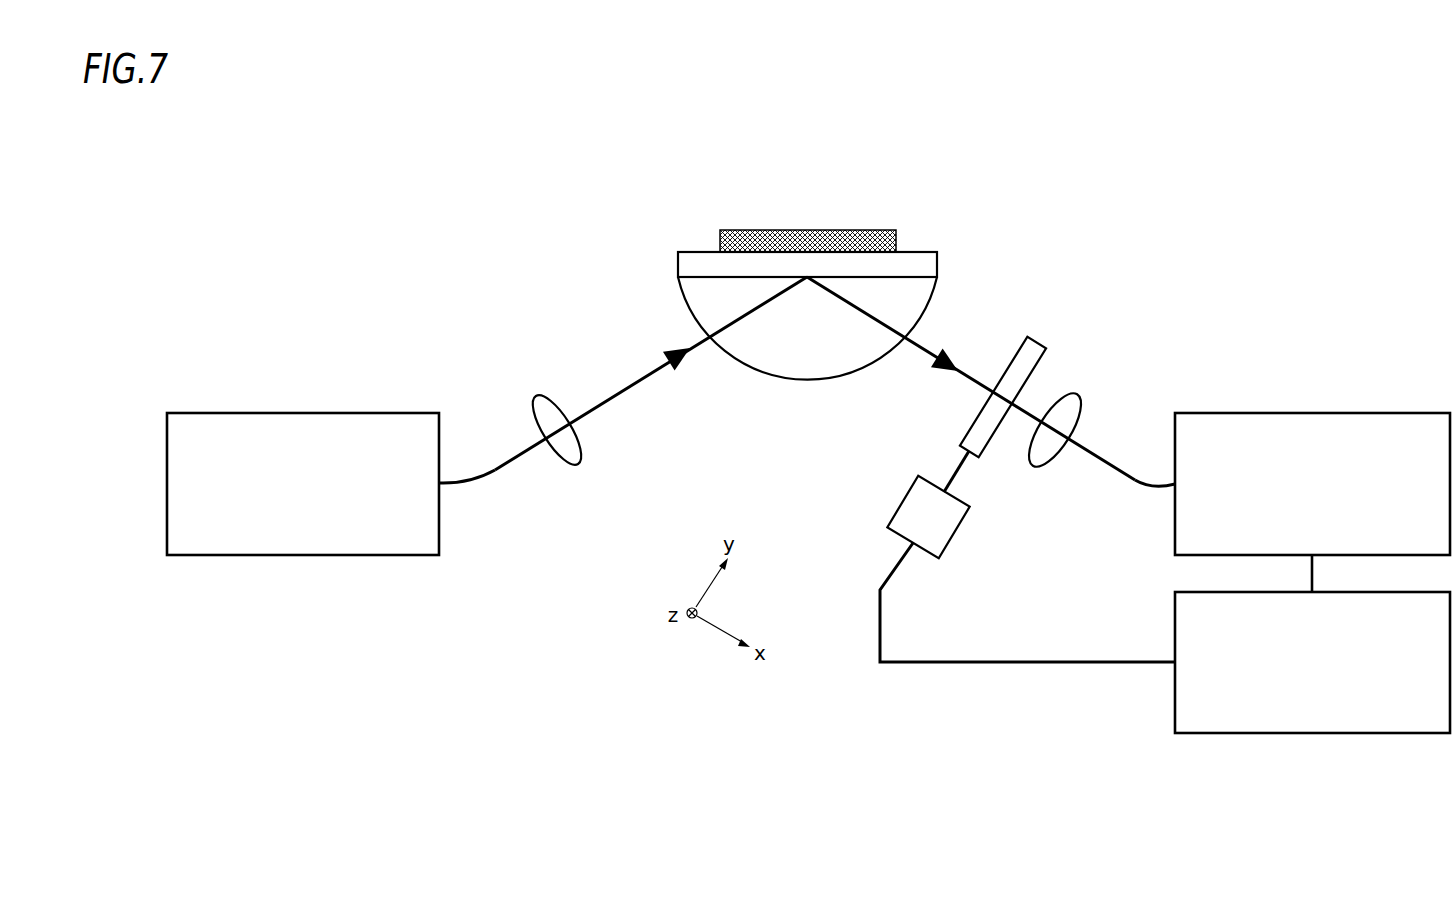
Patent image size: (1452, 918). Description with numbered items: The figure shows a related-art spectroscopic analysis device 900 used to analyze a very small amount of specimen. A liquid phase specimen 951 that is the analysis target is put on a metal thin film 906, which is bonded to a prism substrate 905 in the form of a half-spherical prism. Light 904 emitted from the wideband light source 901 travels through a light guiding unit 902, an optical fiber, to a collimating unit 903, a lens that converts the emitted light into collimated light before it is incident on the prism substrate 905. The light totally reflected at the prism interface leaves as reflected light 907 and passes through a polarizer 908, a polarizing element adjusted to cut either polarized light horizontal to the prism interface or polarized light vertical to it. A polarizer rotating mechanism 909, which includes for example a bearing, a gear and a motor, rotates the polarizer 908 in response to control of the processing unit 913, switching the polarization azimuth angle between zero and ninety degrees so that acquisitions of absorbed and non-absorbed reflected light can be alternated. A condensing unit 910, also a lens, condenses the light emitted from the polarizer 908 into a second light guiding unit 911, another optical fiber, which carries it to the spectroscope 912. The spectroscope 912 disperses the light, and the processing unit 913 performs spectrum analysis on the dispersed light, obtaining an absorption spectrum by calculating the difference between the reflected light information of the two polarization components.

The spectroscopic analysis device 900 is at (1218, 249).
The light source 901 is at (329, 412).
The light guiding unit 902 is at (498, 471).
The collimating unit 903 is at (540, 394).
The light 904 is at (648, 381).
The prism substrate 905 is at (815, 380).
The metal thin film 906 is at (913, 252).
The liquid phase specimen 951 is at (852, 230).
The reflected light 907 is at (931, 345).
The polarizer 908 is at (1040, 335).
The polarizer rotating mechanism 909 is at (955, 531).
The condensing unit 910 is at (1088, 416).
The light guiding unit 911 is at (1107, 466).
The spectroscope 912 is at (1350, 412).
The processing unit 913 is at (1352, 735).